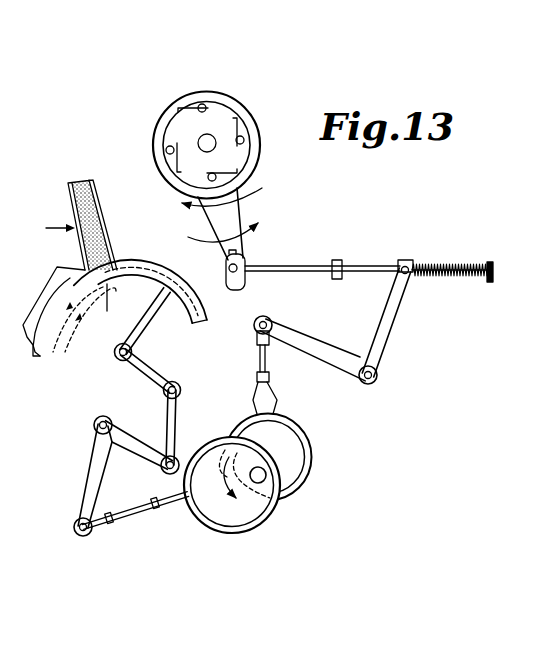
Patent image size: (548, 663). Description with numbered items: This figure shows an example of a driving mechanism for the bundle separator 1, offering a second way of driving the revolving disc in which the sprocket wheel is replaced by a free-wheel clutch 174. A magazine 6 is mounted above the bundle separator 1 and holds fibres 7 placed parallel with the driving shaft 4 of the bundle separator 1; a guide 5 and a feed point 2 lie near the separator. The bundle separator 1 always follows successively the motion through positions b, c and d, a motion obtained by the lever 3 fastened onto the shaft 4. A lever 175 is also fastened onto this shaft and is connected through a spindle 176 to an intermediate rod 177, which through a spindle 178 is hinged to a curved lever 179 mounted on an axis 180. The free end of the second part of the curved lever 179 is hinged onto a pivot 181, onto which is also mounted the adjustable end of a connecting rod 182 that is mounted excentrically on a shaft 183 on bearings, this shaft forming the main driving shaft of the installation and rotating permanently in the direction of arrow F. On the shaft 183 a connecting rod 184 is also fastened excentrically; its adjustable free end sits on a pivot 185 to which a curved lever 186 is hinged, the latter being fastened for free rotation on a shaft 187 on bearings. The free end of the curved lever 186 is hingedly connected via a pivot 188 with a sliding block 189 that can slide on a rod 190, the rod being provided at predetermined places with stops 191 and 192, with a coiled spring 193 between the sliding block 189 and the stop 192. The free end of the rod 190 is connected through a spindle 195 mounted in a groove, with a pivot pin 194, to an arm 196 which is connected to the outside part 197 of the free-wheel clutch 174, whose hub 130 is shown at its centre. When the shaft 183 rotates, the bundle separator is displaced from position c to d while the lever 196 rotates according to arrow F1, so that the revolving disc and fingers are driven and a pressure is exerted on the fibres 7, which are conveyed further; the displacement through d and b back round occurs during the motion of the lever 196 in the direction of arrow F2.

The bundle separator 1 is at (150, 270).
The feed point 2 is at (107, 306).
The lever 3 is at (147, 326).
The driving shaft 4 is at (118, 363).
The guide member 5 is at (36, 316).
The magazine 6 is at (55, 222).
The fibres 7 is at (90, 212).
The shaft 130 is at (208, 136).
The free-wheel clutch 174 is at (223, 115).
The lever 175 is at (154, 370).
The spindle 176 is at (181, 390).
The intermediate rod 177 is at (179, 418).
The spindle 178 is at (180, 460).
The curved lever 179 is at (93, 470).
The axis 180 is at (112, 425).
The pivot 181 is at (80, 536).
The connecting rod 182 is at (164, 506).
The shaft 183 is at (259, 483).
The connecting rod 184 is at (296, 447).
The pivot 185 is at (272, 322).
The curved lever 186 is at (383, 348).
The shaft 187 is at (378, 375).
The pivot 188 is at (407, 260).
The sliding block 189 is at (420, 266).
The rod 190 is at (366, 266).
The stop 191 is at (338, 260).
The stop 192 is at (494, 266).
The coiled spring 193 is at (442, 278).
The pivot pin 194 is at (228, 268).
The spindle 195 is at (241, 262).
The arm 196 is at (242, 212).
The outside part 197 is at (258, 128).
The arrow F is at (243, 483).
The arrow F1 is at (213, 229).
The arrow F2 is at (232, 186).
The position b is at (78, 319).
The position c is at (118, 297).
The position d is at (87, 320).